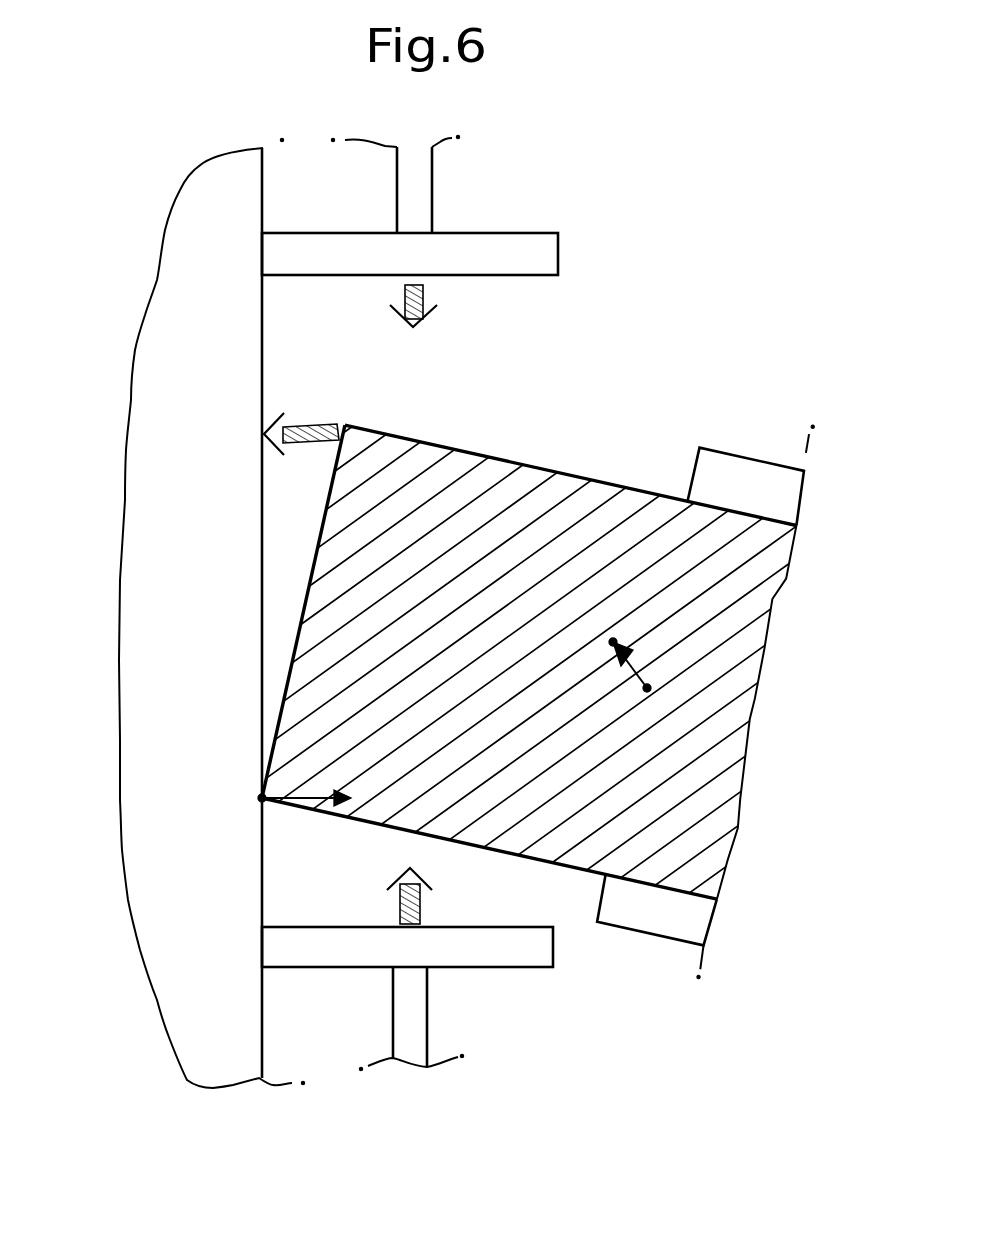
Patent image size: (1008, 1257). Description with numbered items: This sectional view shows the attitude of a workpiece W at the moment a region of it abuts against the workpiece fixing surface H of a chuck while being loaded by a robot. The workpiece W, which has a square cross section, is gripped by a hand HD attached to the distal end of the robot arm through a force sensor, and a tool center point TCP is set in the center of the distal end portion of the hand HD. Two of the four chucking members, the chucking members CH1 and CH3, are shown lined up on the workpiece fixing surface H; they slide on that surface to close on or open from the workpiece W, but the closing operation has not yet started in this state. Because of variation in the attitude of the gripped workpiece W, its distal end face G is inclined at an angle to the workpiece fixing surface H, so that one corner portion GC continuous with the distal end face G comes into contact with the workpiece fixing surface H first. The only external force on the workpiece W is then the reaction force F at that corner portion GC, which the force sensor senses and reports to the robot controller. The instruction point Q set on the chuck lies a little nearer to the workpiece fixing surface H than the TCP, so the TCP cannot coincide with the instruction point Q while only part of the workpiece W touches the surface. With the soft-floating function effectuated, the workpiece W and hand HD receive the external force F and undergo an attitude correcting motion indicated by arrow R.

The chucking member CH1 is at (495, 247).
The chucking member CH3 is at (507, 953).
The workpiece fixing surface H is at (268, 345).
The arrow indicating attitude correcting motion R is at (315, 425).
The distal end face G is at (329, 492).
The workpiece W is at (583, 557).
The hand HD is at (722, 470).
The instruction point Q is at (613, 642).
The tool center point TCP is at (647, 688).
The corner portion GC is at (262, 798).
The reaction force F is at (328, 802).